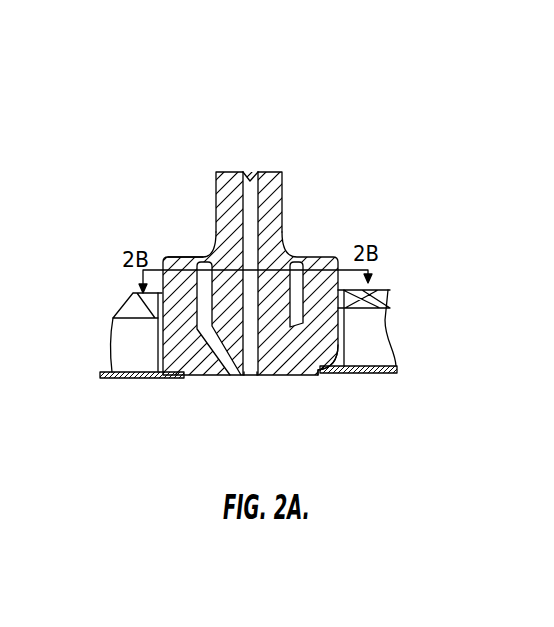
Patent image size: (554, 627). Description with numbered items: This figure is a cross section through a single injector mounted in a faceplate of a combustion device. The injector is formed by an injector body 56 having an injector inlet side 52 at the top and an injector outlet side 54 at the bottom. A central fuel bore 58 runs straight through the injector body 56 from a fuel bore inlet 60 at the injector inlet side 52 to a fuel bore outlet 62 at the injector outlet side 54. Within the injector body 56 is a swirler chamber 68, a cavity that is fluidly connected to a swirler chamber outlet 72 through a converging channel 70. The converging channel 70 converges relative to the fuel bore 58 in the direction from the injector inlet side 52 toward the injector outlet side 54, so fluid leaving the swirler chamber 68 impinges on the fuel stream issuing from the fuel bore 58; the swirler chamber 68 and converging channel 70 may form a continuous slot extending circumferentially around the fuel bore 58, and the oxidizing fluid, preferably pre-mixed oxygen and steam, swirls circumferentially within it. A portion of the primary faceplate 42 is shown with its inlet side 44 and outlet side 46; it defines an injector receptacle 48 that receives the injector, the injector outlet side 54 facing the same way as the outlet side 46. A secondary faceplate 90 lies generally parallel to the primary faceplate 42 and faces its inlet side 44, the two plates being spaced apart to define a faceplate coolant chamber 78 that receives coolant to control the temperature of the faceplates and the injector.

The primary faceplate 42 is at (153, 378).
The inlet side 44 is at (375, 347).
The outlet side 46 is at (388, 371).
The injector receptacle 48 is at (382, 289).
The injector inlet side 52 is at (219, 183).
The injector outlet side 54 is at (327, 376).
The injector body 56 is at (172, 255).
The fuel bore 58 is at (255, 172).
The fuel bore inlet 60 is at (249, 203).
The fuel bore outlet 62 is at (253, 377).
The swirler chamber 68 is at (297, 294).
The converging channel 70 is at (279, 354).
The swirler chamber outlet 72 is at (233, 377).
The faceplate coolant chamber 78 is at (372, 340).
The secondary faceplate 90 is at (133, 292).